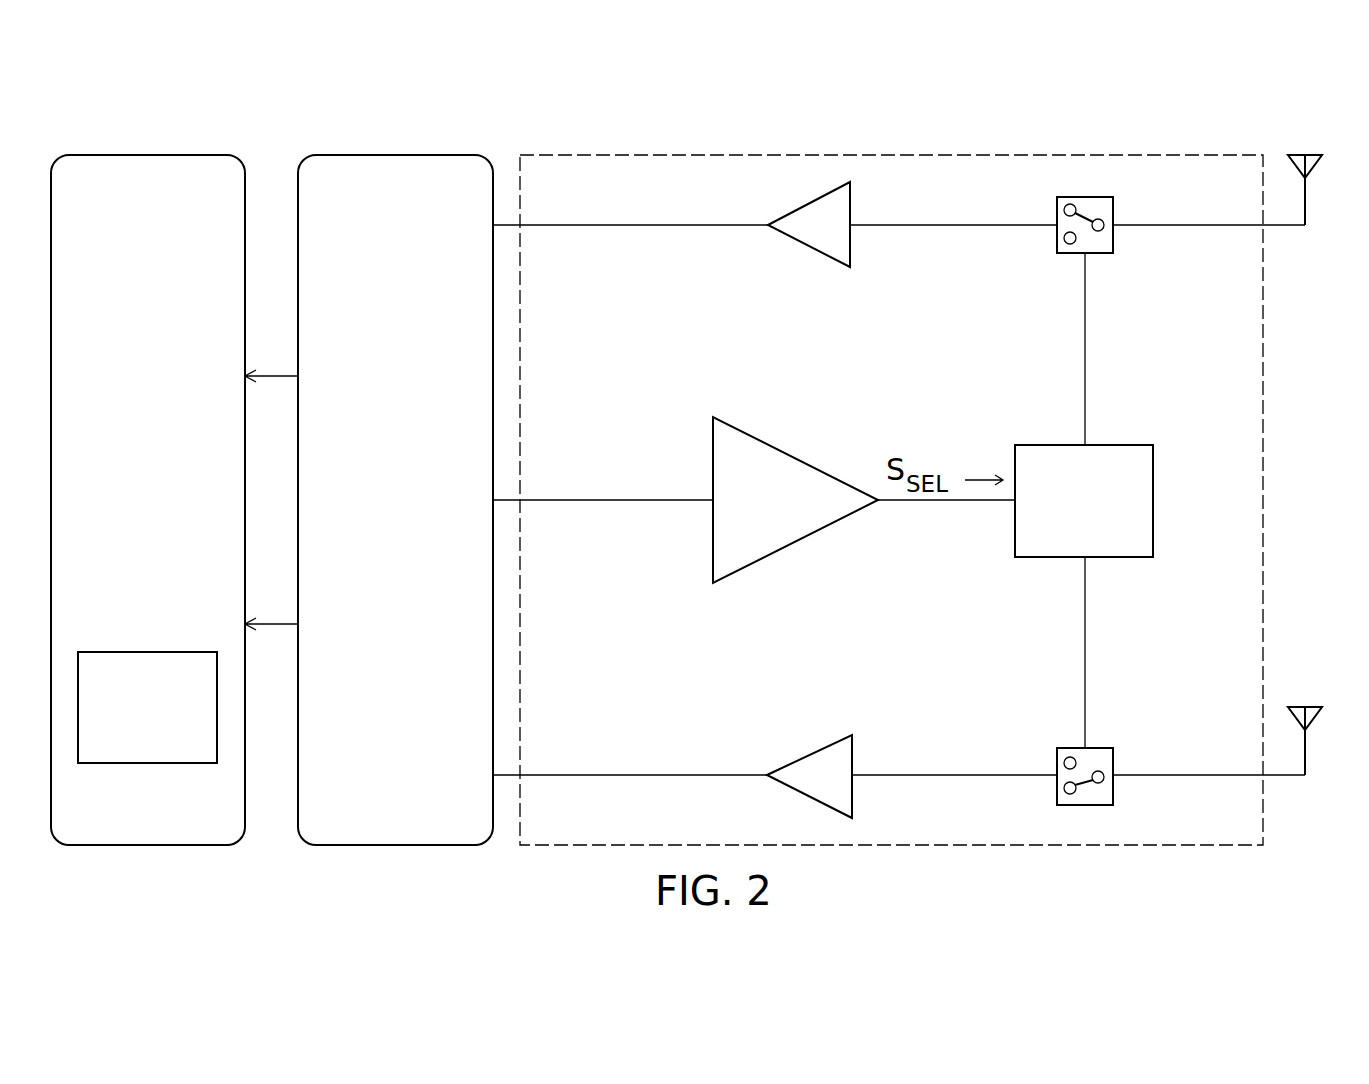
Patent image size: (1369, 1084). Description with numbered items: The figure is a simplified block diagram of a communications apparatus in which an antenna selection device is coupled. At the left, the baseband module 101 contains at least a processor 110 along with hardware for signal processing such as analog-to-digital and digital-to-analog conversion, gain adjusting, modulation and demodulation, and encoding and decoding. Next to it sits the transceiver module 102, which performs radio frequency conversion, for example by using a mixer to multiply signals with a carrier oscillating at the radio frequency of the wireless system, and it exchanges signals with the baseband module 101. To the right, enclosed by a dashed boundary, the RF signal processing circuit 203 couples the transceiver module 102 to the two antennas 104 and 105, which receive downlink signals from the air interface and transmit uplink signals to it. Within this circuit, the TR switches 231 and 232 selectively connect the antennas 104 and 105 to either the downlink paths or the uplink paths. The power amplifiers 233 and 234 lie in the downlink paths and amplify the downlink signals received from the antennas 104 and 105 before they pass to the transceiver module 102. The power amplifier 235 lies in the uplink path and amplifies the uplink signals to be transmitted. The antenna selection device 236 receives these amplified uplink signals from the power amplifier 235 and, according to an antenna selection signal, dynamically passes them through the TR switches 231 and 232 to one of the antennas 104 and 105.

The baseband module 101 is at (187, 155).
The transceiver module 102 is at (435, 155).
The processor 110 is at (148, 652).
The RF signal processing circuit 203 is at (1128, 155).
The antenna 104 is at (1298, 155).
The antenna 105 is at (1298, 707).
The TR switch 231 is at (1100, 253).
The TR switch 232 is at (1103, 748).
The power amplifier 233 is at (807, 245).
The power amplifier 234 is at (812, 752).
The power amplifier 235 is at (795, 455).
The antenna selection device 236 is at (1125, 445).